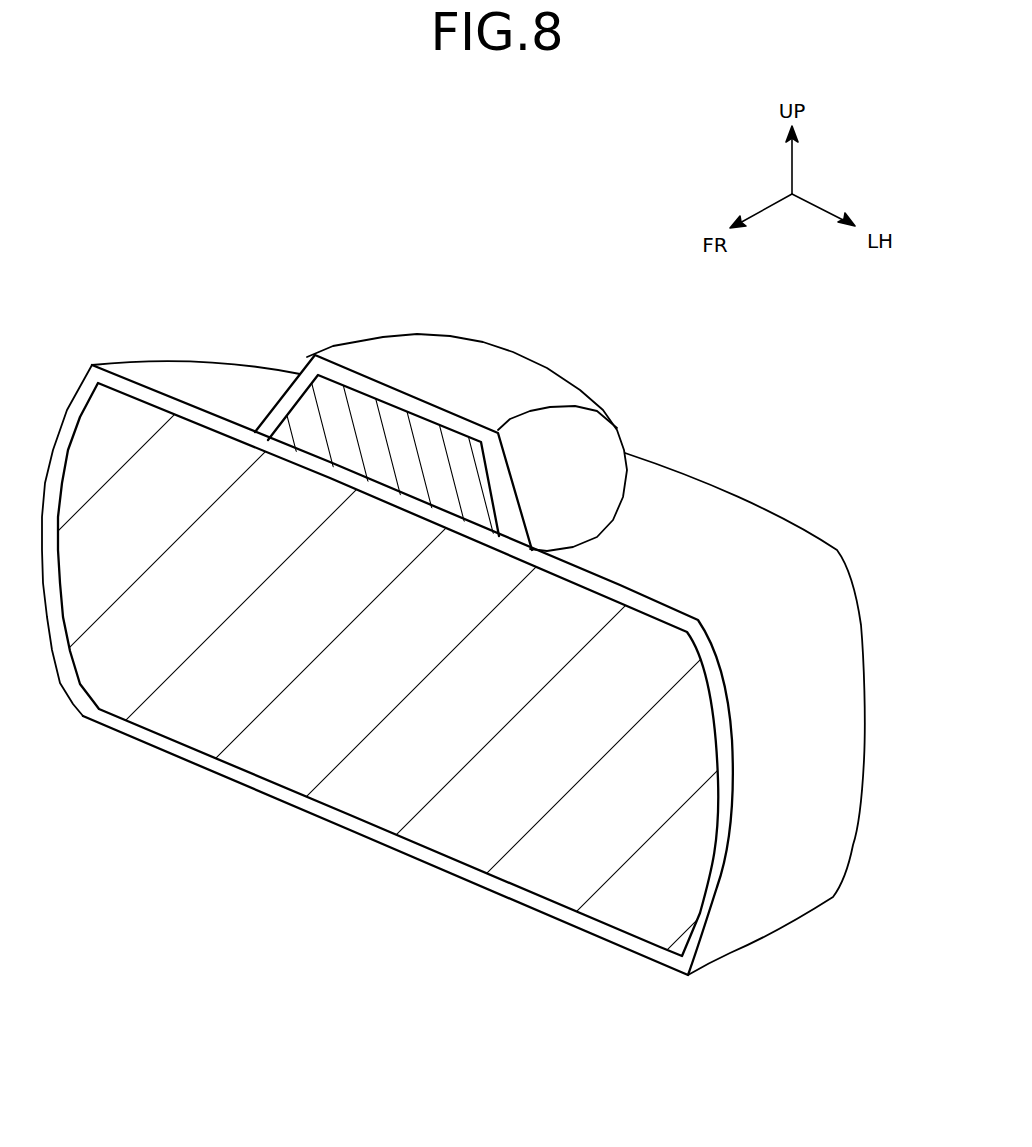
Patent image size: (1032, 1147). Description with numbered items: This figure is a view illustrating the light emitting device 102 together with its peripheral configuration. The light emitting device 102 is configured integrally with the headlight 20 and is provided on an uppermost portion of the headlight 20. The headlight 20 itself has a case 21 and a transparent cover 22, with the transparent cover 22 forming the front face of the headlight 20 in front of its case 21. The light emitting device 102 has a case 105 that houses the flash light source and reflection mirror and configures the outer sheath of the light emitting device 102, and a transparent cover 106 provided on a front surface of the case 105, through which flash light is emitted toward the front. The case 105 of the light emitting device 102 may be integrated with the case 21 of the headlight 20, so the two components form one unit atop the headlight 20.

The headlight 20 is at (516, 500).
The case 21 is at (847, 793).
The transparent cover 22 is at (530, 868).
The light emitting device 102 is at (473, 402).
The case 105 is at (600, 437).
The transparent cover 106 is at (332, 403).